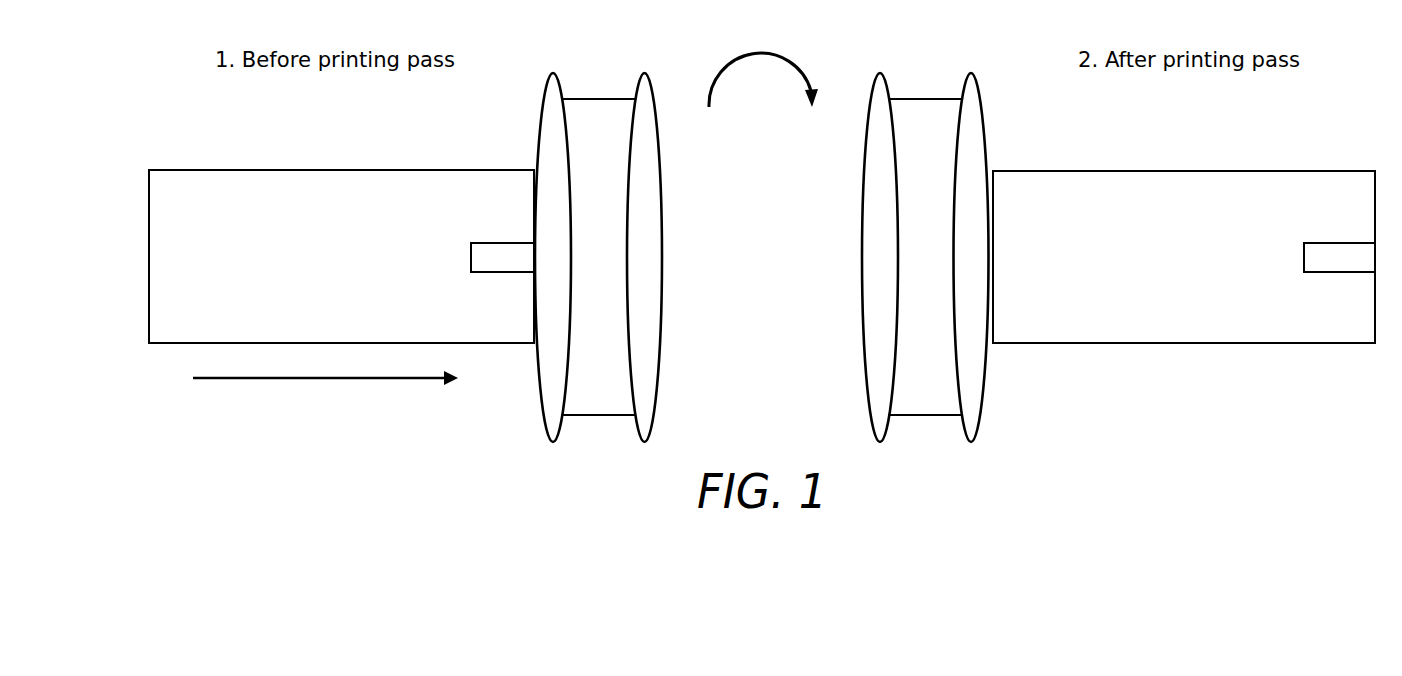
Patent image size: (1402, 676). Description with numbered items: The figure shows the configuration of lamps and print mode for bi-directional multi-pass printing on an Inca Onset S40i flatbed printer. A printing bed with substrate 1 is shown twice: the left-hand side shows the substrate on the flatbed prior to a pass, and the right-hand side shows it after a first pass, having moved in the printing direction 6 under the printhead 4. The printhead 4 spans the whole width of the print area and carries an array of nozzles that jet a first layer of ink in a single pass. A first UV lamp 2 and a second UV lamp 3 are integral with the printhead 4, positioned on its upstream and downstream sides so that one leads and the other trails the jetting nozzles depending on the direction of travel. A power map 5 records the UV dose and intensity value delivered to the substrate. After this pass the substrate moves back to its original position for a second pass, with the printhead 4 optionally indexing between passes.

The printing bed with substrate 1 is at (303, 268).
The first UV lamp 2 is at (545, 268).
The second UV lamp 3 is at (637, 268).
The printhead 4 is at (591, 268).
The power map for recording UV dose and intensity value 5 is at (496, 268).
The printing direction 6 is at (326, 380).